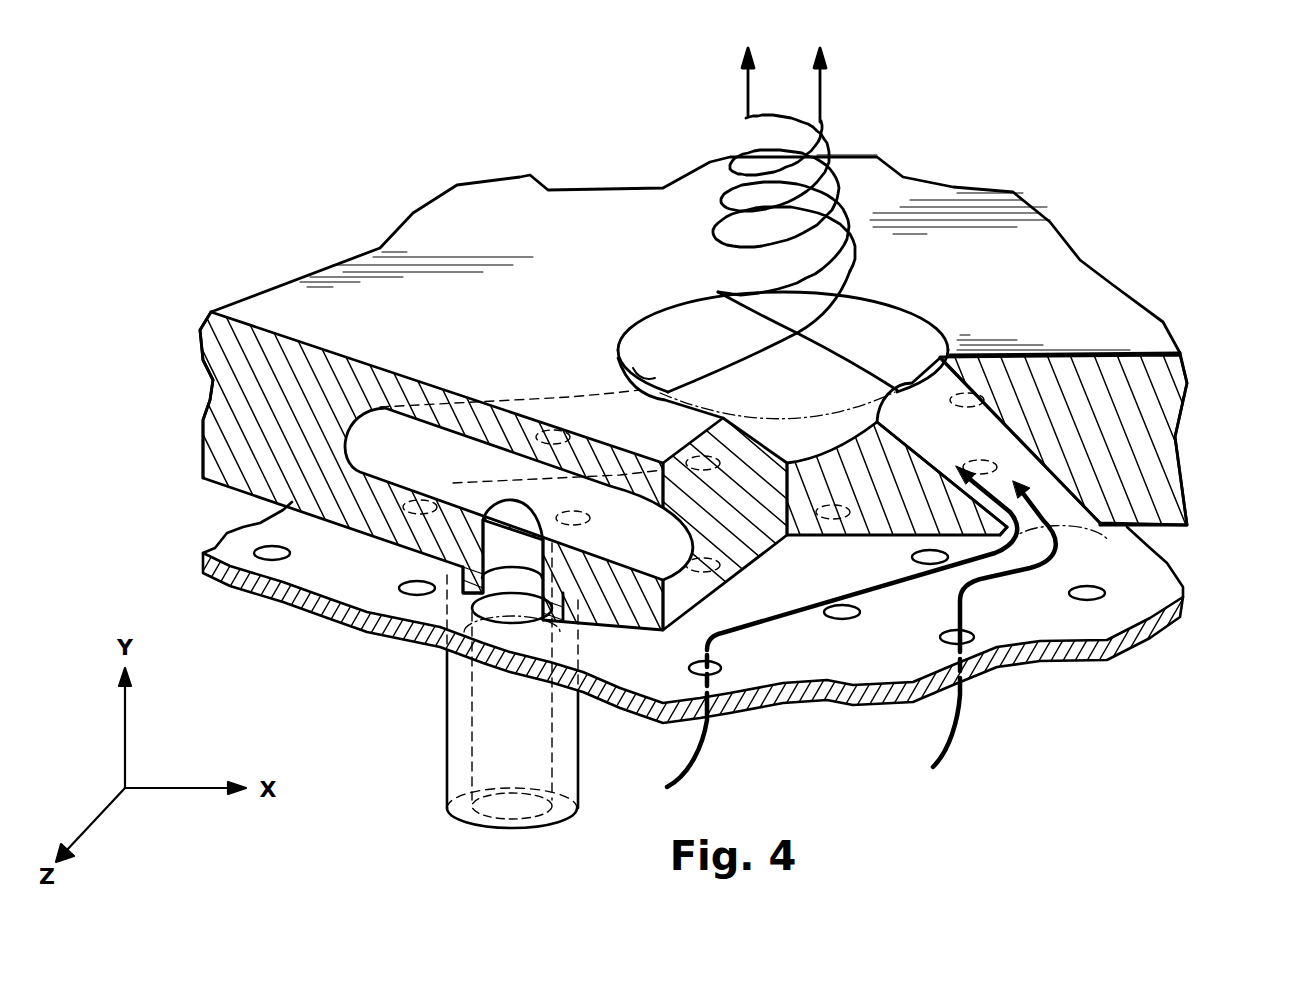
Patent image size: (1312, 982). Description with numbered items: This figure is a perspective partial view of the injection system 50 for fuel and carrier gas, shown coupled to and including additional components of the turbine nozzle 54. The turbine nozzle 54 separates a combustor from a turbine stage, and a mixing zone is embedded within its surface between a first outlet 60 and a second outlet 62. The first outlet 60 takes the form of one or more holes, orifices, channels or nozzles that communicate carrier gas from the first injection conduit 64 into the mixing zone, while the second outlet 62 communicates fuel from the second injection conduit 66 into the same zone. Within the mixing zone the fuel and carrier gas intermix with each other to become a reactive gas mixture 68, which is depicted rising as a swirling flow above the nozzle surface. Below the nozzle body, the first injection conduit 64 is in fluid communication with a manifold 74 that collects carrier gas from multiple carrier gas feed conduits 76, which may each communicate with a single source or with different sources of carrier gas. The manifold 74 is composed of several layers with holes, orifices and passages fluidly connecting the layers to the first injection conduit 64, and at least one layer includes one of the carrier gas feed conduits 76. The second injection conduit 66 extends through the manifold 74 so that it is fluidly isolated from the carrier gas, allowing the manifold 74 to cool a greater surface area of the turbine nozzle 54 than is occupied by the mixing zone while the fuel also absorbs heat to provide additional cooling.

The injection system 50 is at (412, 162).
The turbine nozzle 54 is at (540, 225).
The first outlet 60 is at (913, 383).
The second outlet 62 is at (633, 368).
The first injection conduit 64 is at (970, 432).
The second injection conduit 66 is at (530, 407).
The reactive gas mixture 68 is at (745, 136).
The manifold 74 is at (1218, 512).
The carrier gas feed conduits 76 is at (1003, 462).